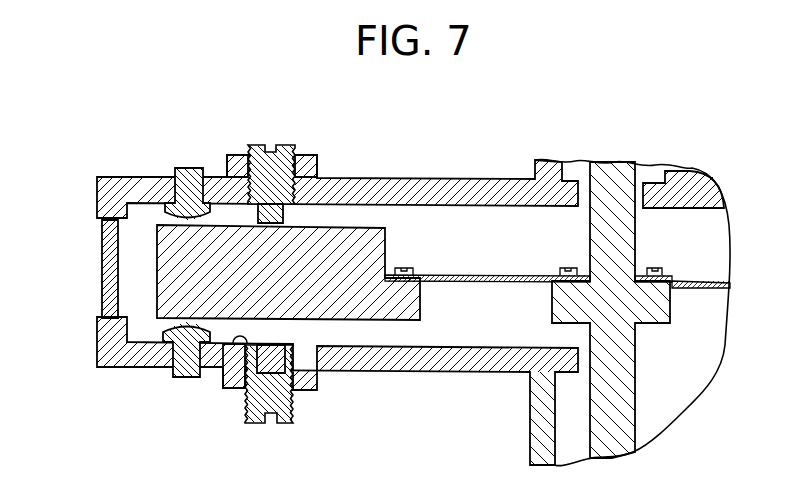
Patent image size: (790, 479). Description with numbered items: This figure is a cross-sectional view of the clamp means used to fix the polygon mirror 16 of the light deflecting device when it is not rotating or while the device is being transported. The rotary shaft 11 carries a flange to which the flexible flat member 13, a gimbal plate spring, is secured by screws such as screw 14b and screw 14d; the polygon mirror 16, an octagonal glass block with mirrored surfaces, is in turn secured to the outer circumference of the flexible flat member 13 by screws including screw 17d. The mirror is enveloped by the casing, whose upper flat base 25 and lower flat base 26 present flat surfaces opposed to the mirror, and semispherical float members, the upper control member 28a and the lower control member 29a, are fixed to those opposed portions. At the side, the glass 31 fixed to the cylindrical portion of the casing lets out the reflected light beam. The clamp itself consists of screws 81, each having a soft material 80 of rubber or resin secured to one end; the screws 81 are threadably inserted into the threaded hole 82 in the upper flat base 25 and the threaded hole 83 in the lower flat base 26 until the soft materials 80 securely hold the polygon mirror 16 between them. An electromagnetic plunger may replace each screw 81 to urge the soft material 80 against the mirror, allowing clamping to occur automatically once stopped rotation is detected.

The rotary shaft 11 is at (620, 407).
The flexible flat member 13 is at (440, 275).
The screw 14b is at (656, 268).
The screw 14d is at (565, 268).
The polygon mirror 16 is at (400, 301).
The screw 17d is at (405, 268).
The upper flat base 25 is at (437, 187).
The lower flat base 26 is at (485, 371).
The upper control member 28a is at (184, 168).
The lower control member 29a is at (178, 377).
The glass 31 is at (102, 249).
The soft material 80 is at (271, 223).
The screw 81 is at (283, 145).
The threaded hole 82 is at (258, 150).
The threaded hole 83 is at (232, 372).